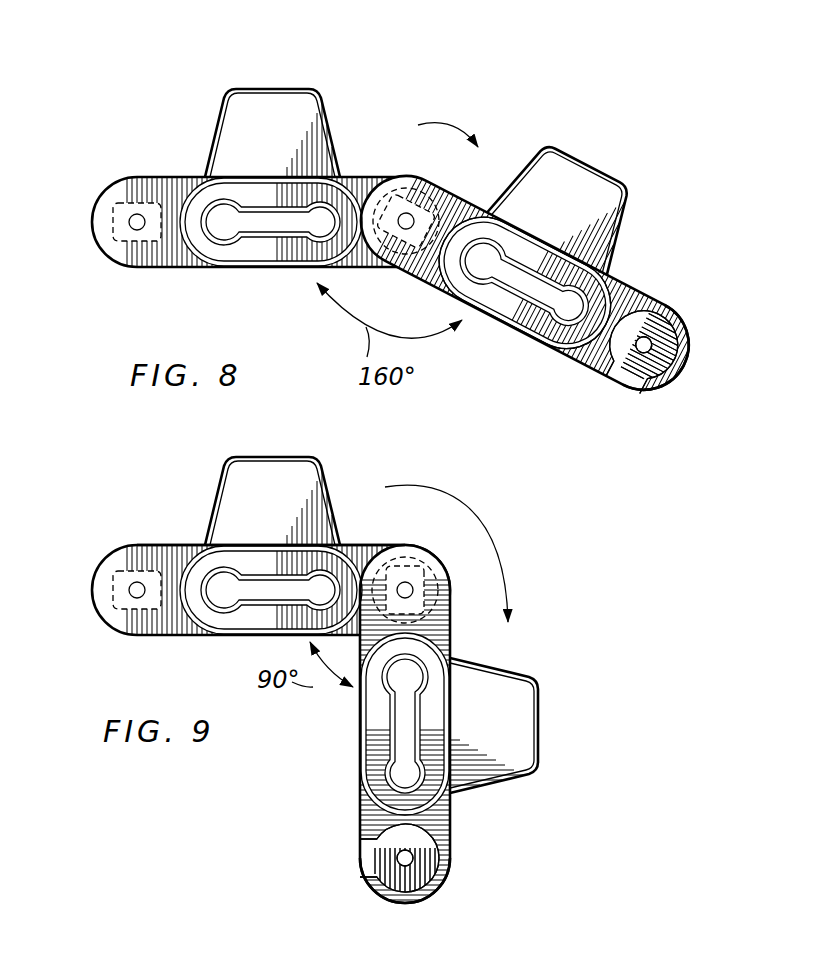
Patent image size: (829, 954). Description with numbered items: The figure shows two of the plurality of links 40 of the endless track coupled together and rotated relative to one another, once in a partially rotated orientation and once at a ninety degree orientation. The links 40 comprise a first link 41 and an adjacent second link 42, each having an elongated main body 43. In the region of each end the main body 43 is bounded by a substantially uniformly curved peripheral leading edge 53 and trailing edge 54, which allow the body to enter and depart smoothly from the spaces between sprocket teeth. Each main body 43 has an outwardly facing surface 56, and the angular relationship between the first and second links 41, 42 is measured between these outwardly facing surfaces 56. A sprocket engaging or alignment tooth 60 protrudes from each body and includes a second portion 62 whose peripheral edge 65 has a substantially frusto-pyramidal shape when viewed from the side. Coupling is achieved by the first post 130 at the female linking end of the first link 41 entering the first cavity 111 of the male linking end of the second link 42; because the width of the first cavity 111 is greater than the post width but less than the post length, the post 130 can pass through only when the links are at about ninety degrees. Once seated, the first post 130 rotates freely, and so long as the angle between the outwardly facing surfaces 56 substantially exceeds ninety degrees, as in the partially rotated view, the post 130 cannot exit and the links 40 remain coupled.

In FIG. 8, the links 40 is at (648, 163).
In FIG. 9, the links 40 is at (573, 617).
In FIG. 8, the first link 41 is at (695, 352).
In FIG. 9, the first link 41 is at (445, 897).
In FIG. 8, the second link 42 is at (125, 177).
In FIG. 9, the second link 42 is at (127, 543).
In FIG. 9, the main body 43 is at (297, 543).
In FIG. 8, the leading edge 53 is at (613, 303).
In FIG. 8, the trailing edge 54 is at (444, 193).
In FIG. 8, the outwardly facing surface 56 is at (172, 270).
In FIG. 9, the outwardly facing surface 56 is at (172, 637).
In FIG. 8, the sprocket engaging or alignment tooth 60 is at (396, 233).
In FIG. 9, the sprocket engaging or alignment tooth 60 is at (351, 651).
In FIG. 8, the second portion 62 is at (243, 108).
In FIG. 9, the second portion 62 is at (242, 475).
In FIG. 8, the peripheral edge 65 is at (327, 108).
In FIG. 9, the peripheral edge 65 is at (513, 780).
In FIG. 8, the first cavity 111 is at (635, 377).
In FIG. 9, the first cavity 111 is at (370, 867).
In FIG. 8, the first post 130 is at (92, 232).
In FIG. 9, the first post 130 is at (92, 600).